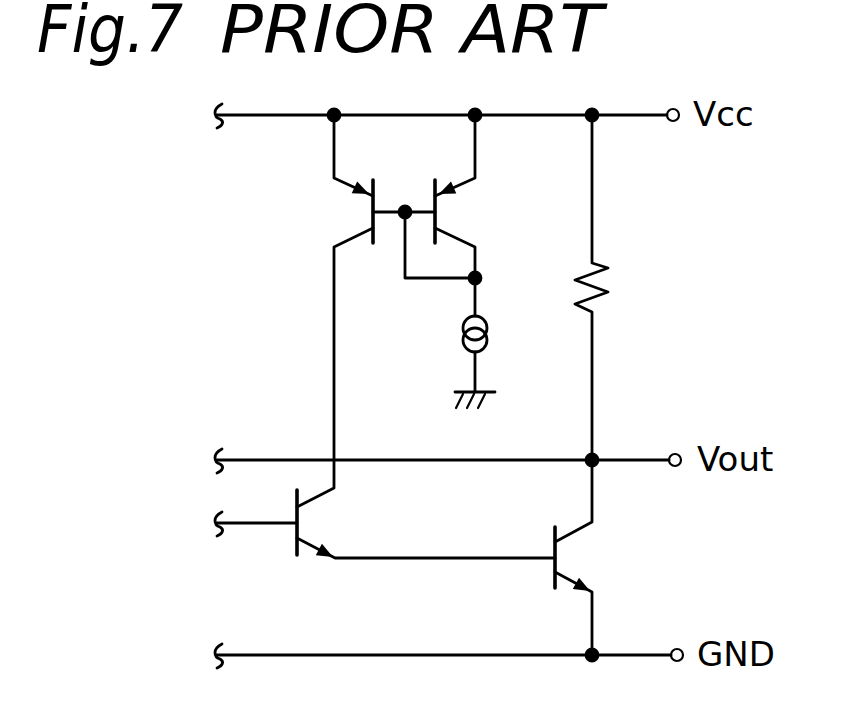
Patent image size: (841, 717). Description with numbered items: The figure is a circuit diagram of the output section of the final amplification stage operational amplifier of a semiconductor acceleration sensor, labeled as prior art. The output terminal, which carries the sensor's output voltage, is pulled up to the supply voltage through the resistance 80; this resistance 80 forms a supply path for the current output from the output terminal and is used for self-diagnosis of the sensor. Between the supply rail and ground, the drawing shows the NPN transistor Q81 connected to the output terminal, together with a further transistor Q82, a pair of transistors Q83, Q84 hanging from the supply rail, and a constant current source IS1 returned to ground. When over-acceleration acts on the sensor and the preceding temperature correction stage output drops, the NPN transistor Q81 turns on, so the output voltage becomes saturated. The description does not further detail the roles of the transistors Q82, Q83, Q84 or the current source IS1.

The NPN transistor Q81 is at (565, 553).
The drive transistor Q82 is at (305, 518).
The current mirror transistor Q83 is at (370, 216).
The current mirror transistor Q84 is at (452, 210).
The resistance 80 is at (610, 278).
The constant current source IS1 is at (502, 308).